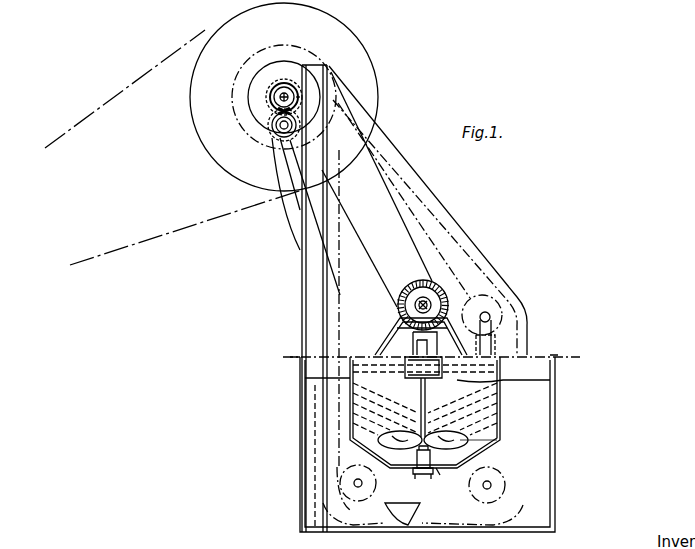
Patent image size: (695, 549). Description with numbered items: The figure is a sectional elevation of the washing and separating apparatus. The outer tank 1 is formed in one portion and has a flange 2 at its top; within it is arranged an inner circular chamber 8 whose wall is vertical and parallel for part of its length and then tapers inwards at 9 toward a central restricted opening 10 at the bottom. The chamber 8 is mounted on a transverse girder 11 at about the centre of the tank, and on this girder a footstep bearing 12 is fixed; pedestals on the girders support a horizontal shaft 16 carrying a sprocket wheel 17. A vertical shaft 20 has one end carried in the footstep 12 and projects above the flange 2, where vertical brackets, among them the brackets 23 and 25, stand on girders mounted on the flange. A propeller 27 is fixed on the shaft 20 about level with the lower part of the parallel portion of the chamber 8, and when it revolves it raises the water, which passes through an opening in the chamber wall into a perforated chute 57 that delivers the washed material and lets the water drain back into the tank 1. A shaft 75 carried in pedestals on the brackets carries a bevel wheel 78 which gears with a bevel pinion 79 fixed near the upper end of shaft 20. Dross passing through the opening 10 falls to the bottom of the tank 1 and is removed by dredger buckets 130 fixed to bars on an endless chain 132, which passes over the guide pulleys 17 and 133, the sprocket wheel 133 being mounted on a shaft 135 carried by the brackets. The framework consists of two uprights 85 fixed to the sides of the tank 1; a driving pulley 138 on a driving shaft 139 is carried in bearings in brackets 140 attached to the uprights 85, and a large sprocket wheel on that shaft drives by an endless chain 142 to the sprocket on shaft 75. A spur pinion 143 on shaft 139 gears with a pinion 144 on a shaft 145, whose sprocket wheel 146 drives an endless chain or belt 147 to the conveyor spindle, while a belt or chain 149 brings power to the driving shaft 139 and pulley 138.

The outer tank 1 is at (300, 440).
The flange 2 is at (293, 357).
The inner circular chamber 8 is at (350, 411).
The tapering wall portion 9 is at (482, 449).
The restricted opening 10 is at (440, 470).
The transverse girder 11 is at (423, 476).
The footstep bearing 12 is at (432, 462).
The horizontal shaft 16 is at (363, 483).
The sprocket wheel 17 is at (353, 500).
The vertical shaft 20 is at (426, 413).
The vertical bracket 23 is at (387, 339).
The vertical bracket 25 is at (497, 345).
The propeller 27 is at (390, 441).
The chute 57 is at (443, 370).
The shaft 75 is at (440, 304).
The bevel wheel 78 is at (410, 292).
The bevel pinion 79 is at (416, 343).
The upright 85 is at (302, 268).
The dredger bucket 130 is at (408, 513).
The endless chain 132 is at (472, 267).
The sprocket wheel 133 is at (497, 323).
The shaft 135 is at (492, 315).
The driving pulley 138 is at (378, 80).
The driving shaft 139 is at (300, 96).
The bracket 140 is at (294, 80).
The endless chain 142 is at (420, 247).
The spur pinion 143 is at (278, 82).
The pinion 144 is at (272, 122).
The shaft 145 is at (280, 132).
The sprocket wheel 146 is at (283, 137).
The endless chain or belt 147 is at (345, 212).
The belt or chain 149 is at (93, 115).